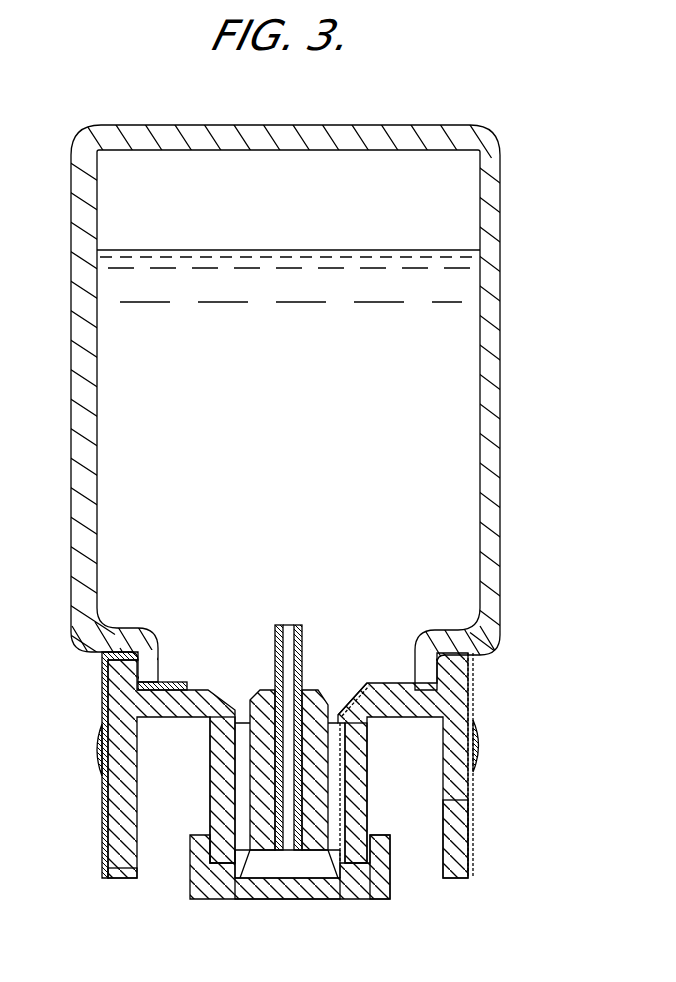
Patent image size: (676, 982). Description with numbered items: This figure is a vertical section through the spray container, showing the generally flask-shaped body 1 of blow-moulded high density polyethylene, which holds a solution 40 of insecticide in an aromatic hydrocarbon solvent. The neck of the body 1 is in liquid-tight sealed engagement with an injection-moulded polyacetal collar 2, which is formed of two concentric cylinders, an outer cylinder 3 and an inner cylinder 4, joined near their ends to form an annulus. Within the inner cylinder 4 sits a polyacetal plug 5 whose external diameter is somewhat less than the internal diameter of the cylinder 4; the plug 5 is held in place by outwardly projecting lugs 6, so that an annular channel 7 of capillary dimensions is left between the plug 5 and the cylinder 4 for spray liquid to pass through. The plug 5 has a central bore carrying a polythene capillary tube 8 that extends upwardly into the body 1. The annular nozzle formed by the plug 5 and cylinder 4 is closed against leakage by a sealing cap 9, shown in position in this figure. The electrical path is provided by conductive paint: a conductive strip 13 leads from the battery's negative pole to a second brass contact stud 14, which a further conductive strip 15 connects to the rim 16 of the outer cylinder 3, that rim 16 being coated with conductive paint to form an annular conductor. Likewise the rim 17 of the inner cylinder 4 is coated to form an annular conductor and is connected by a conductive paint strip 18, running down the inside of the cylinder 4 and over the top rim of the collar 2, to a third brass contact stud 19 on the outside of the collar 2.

The body 1 is at (505, 160).
The collar 2 is at (470, 818).
The outer cylinder 3 is at (443, 790).
The inner cylinder 4 is at (365, 750).
The plug 5 is at (318, 690).
The lugs 6 is at (230, 745).
The annular channel 7 is at (242, 860).
The capillary tube 8 is at (284, 624).
The sealing cap 9 is at (390, 890).
The conductive strip 13 is at (102, 688).
The second brass contact stud 14 is at (98, 745).
The conductive strip 15 is at (105, 820).
The rim of outer cylinder 16 is at (118, 880).
The rim of inner cylinder 17 is at (352, 899).
The conductive paint strip 18 is at (396, 683).
The third brass contact stud 19 is at (482, 745).
The solution 40 is at (232, 270).